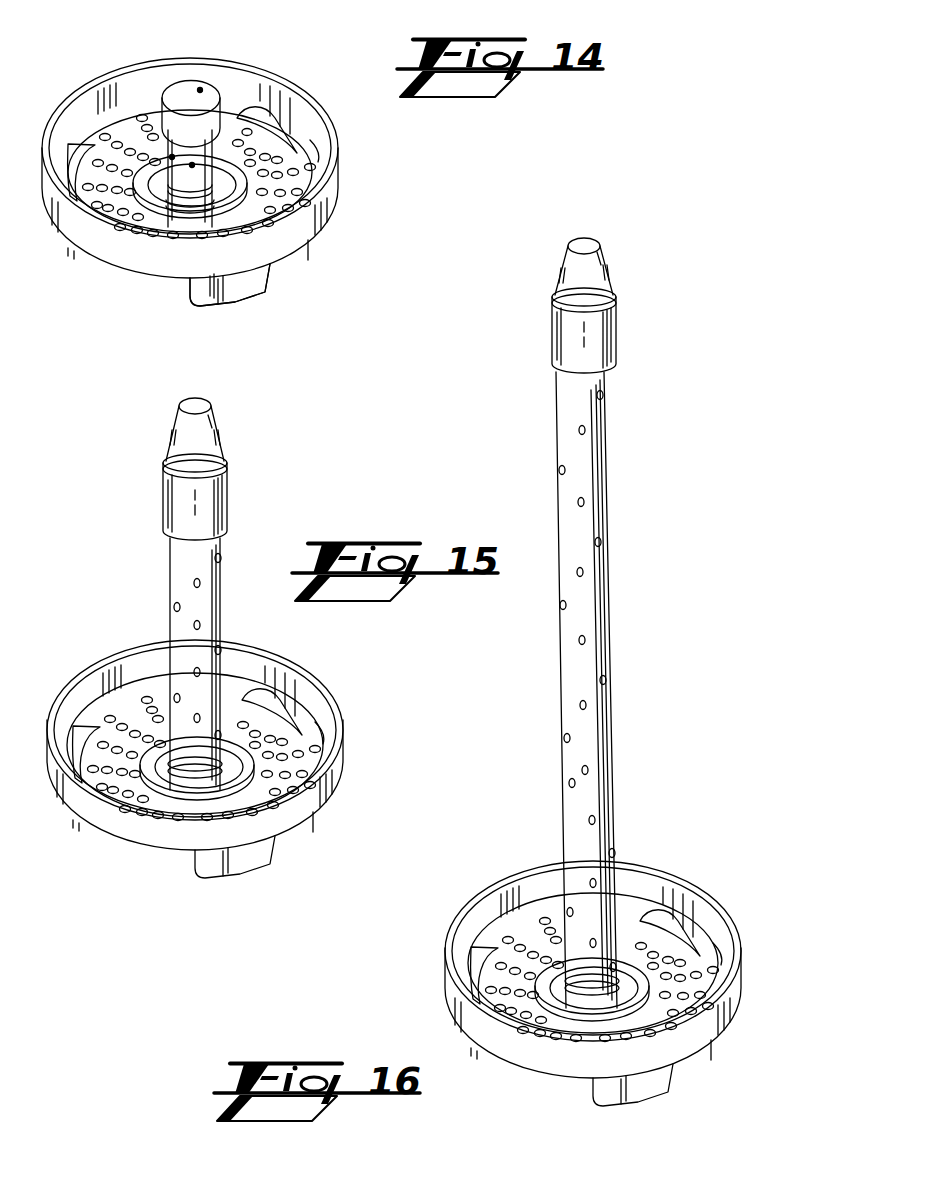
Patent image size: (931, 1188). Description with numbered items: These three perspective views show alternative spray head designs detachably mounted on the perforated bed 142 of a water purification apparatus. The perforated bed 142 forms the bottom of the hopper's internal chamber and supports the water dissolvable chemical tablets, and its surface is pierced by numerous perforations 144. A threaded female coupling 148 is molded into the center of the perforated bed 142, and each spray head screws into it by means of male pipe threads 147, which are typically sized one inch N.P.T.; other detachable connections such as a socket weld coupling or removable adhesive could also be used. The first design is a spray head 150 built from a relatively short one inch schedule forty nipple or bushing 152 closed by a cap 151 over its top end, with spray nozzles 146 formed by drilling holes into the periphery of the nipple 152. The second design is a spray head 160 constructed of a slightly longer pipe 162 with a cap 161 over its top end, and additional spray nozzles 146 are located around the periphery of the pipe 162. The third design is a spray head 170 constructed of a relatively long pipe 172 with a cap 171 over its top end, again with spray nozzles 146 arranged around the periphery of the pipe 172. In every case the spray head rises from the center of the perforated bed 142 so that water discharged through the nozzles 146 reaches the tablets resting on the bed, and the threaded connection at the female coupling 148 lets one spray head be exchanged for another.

In FIG. 14, the perforated bed 142 is at (118, 120).
In FIG. 15, the perforated bed 142 is at (113, 697).
In FIG. 16, the perforated bed 142 is at (520, 918).
In FIG. 14, the perforations 144 is at (120, 222).
In FIG. 15, the perforations 144 is at (123, 797).
In FIG. 16, the perforations 144 is at (523, 1020).
In FIG. 14, the spray nozzles 146 is at (270, 262).
In FIG. 15, the spray nozzles 146 is at (170, 606).
In FIG. 16, the spray nozzles 146 is at (588, 576).
In FIG. 14, the male pipe threads 147 is at (222, 176).
In FIG. 15, the male pipe threads 147 is at (228, 756).
In FIG. 16, the male pipe threads 147 is at (627, 981).
In FIG. 14, the threaded female coupling 148 is at (222, 198).
In FIG. 15, the threaded female coupling 148 is at (227, 781).
In FIG. 16, the threaded female coupling 148 is at (627, 1005).
In FIG. 14, the spray head 150 is at (200, 70).
In FIG. 14, the cap 151 is at (203, 92).
In FIG. 14, the nipple or bushing 152 is at (251, 133).
In FIG. 15, the spray head 160 is at (202, 573).
In FIG. 15, the cap 161 is at (223, 458).
In FIG. 15, the pipe 162 is at (222, 590).
In FIG. 16, the spray head 170 is at (630, 594).
In FIG. 16, the cap 171 is at (618, 300).
In FIG. 16, the pipe 172 is at (606, 447).